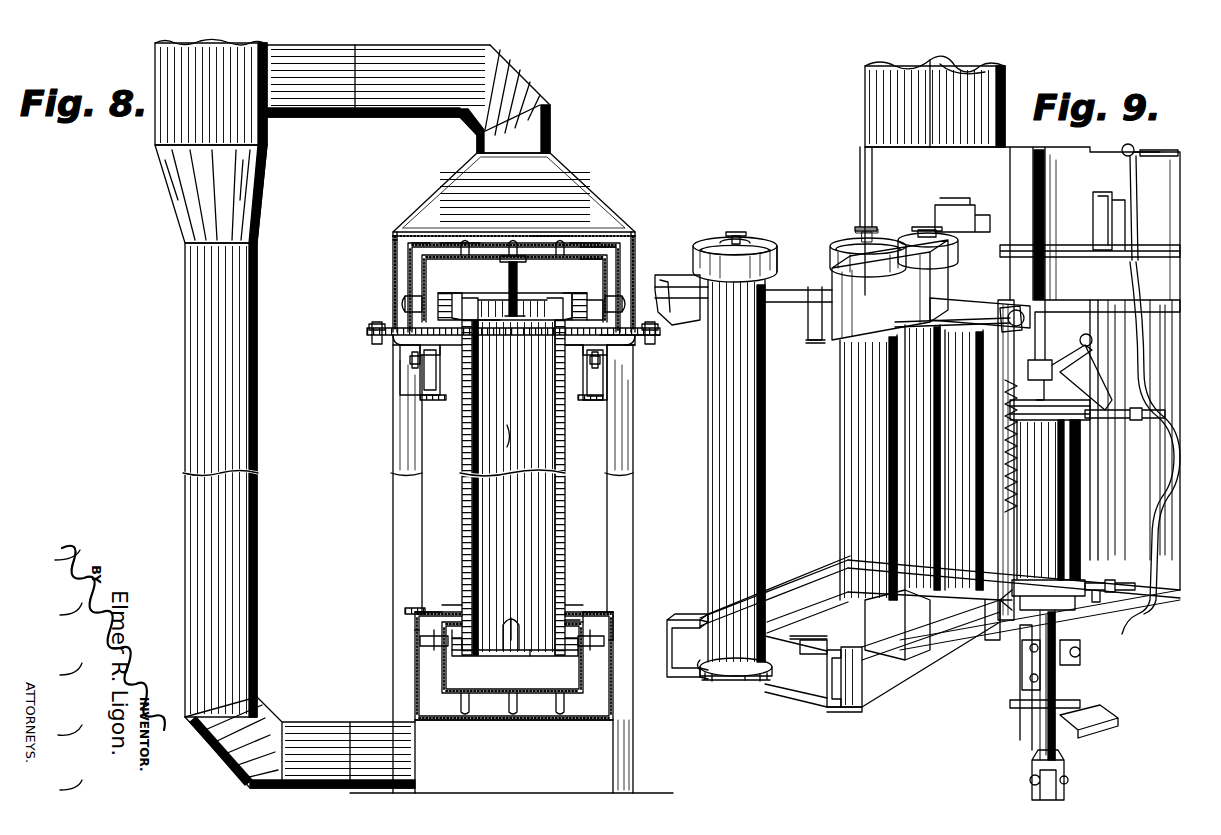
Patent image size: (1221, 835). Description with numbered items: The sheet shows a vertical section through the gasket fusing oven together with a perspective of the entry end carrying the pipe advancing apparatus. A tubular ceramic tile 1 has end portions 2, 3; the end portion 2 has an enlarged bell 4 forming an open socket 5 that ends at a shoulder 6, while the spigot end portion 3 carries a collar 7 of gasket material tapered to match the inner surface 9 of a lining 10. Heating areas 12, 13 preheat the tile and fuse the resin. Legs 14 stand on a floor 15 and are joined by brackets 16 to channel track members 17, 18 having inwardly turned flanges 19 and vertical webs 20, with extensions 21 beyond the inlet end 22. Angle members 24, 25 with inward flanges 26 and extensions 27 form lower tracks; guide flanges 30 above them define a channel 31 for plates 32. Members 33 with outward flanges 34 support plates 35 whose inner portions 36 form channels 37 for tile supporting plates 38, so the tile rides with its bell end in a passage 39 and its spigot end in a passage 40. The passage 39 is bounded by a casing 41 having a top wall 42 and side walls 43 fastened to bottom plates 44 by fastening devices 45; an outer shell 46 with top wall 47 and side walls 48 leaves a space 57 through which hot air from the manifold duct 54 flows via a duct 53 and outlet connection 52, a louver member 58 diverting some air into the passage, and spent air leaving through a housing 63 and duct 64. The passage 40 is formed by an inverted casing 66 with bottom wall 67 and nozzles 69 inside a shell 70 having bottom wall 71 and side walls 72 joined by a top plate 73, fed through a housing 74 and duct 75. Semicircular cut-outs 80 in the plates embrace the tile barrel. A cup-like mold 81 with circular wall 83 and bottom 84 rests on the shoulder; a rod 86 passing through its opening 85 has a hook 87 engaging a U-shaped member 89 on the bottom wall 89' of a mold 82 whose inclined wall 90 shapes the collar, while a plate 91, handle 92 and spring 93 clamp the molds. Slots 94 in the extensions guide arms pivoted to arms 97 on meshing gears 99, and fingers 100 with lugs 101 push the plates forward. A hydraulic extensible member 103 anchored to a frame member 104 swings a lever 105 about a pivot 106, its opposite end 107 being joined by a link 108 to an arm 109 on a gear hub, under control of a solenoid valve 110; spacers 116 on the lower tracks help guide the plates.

In FIG. 8, the tubular clay or ceramic tile 1 is at (465, 492).
In FIG. 9, the tubular clay or ceramic tile 1 is at (768, 385).
In FIG. 8, the end portion 2 is at (590, 315).
In FIG. 9, the end portion 2 is at (695, 262).
In FIG. 8, the end portion 3 is at (566, 621).
In FIG. 9, the end portion 3 is at (718, 676).
In FIG. 8, the enlarged bell 4 is at (580, 342).
In FIG. 9, the enlarged bell 4 is at (778, 260).
In FIG. 8, the open socket 5 is at (578, 300).
In FIG. 8, the shoulder or abutment 6 is at (552, 300).
In FIG. 8, the collar or band portion 7 is at (457, 652).
In FIG. 8, the tapered inner surface 9 is at (462, 293).
In FIG. 8, the lining 10 is at (448, 292).
In FIG. 9, the heating area 12 is at (1090, 150).
In FIG. 8, the heating area 13 is at (397, 235).
In FIG. 8, the legs 14 is at (396, 532).
In FIG. 9, the legs 14 is at (1024, 712).
In FIG. 8, the floor 15 is at (651, 793).
In FIG. 9, the floor 15 is at (1100, 732).
In FIG. 8, the brackets 16 is at (615, 399).
In FIG. 8, the track member 17 is at (430, 400).
In FIG. 9, the track member 17 is at (668, 292).
In FIG. 8, the track member 18 is at (586, 401).
In FIG. 9, the track member 18 is at (822, 342).
In FIG. 8, the flanges 19 is at (438, 376).
In FIG. 9, the flanges 19 is at (812, 298).
In FIG. 8, the web 20 is at (408, 348).
In FIG. 9, the web 20 is at (904, 325).
In FIG. 9, the extensions 21 is at (842, 372).
In FIG. 9, the inlet end 22 is at (953, 205).
In FIG. 8, the structural member 24 is at (416, 633).
In FIG. 9, the structural member 24 is at (680, 632).
In FIG. 8, the structural member 25 is at (611, 632).
In FIG. 9, the structural member 25 is at (830, 665).
In FIG. 8, the flanges 26 is at (440, 605).
In FIG. 9, the flanges 26 is at (812, 648).
In FIG. 9, the extensions 27 is at (838, 708).
In FIG. 8, the flanges 30 is at (606, 606).
In FIG. 9, the flanges 30 is at (862, 690).
In FIG. 8, the channel 31 is at (590, 606).
In FIG. 9, the channel 31 is at (820, 660).
In FIG. 8, the plates 32 is at (455, 598).
In FIG. 9, the plates 32 is at (700, 600).
In FIG. 8, the members 33 is at (622, 346).
In FIG. 8, the outwardly directed flanges 34 is at (640, 340).
In FIG. 8, the plates 35 is at (660, 333).
In FIG. 8, the inner portions 36 is at (592, 342).
In FIG. 8, the channels 37 is at (420, 300).
In FIG. 8, the tile supporting plates 38 is at (446, 370).
In FIG. 8, the passage 39 is at (600, 246).
In FIG. 8, the passage 40 is at (496, 720).
In FIG. 8, the casing 41 is at (410, 262).
In FIG. 8, the top wall 42 is at (590, 243).
In FIG. 8, the side walls 43 is at (422, 280).
In FIG. 8, the bottom plates 44 is at (381, 331).
In FIG. 9, the bottom plates 44 is at (1160, 242).
In FIG. 8, the fastening devices 45 is at (378, 342).
In FIG. 8, the outer shell 46 is at (600, 258).
In FIG. 9, the outer shell 46 is at (1165, 168).
In FIG. 8, the top wall 47 is at (420, 244).
In FIG. 8, the side walls 48 is at (395, 252).
In FIG. 9, the side walls 48 is at (1143, 168).
In FIG. 8, the outlet connection 52 is at (588, 190).
In FIG. 8, the duct 53 is at (552, 112).
In FIG. 8, the manifold duct 54 is at (157, 47).
In FIG. 8, the space 57 is at (548, 238).
In FIG. 8, the louver member 58 is at (470, 243).
In FIG. 9, the housing 63 is at (880, 162).
In FIG. 9, the duct 64 is at (1000, 131).
In FIG. 8, the casing 66 is at (440, 677).
In FIG. 8, the bottom wall 67 is at (559, 712).
In FIG. 8, the nozzles 69 is at (465, 712).
In FIG. 8, the shell 70 is at (416, 711).
In FIG. 8, the bottom wall 71 is at (528, 720).
In FIG. 8, the side walls 72 is at (614, 686).
In FIG. 8, the top plate 73 is at (416, 622).
In FIG. 8, the housing 74 is at (606, 740).
In FIG. 8, the duct 75 is at (332, 724).
In FIG. 9, the cut-out portions 80 is at (800, 615).
In FIG. 8, the mold 81 is at (588, 305).
In FIG. 9, the mold 81 is at (750, 240).
In FIG. 8, the mold 82 is at (481, 656).
In FIG. 9, the mold 82 is at (730, 680).
In FIG. 8, the circular wall 83 is at (478, 300).
In FIG. 8, the bottom 84 is at (487, 321).
In FIG. 8, the opening 85 is at (518, 316).
In FIG. 8, the rod 86 is at (512, 440).
In FIG. 8, the hook 87 is at (545, 606).
In FIG. 8, the U-shaped member 89 is at (513, 649).
In FIG. 8, the bottom wall 89' is at (545, 665).
In FIG. 9, the bottom wall 89' is at (758, 692).
In FIG. 8, the circular wall 90 is at (432, 648).
In FIG. 9, the circular wall 90 is at (706, 674).
In FIG. 8, the plate 91 is at (530, 300).
In FIG. 8, the handle 92 is at (506, 257).
In FIG. 9, the handle 92 is at (742, 232).
In FIG. 8, the spring 93 is at (521, 268).
In FIG. 9, the spring 93 is at (730, 238).
In FIG. 9, the elongated slots 94 is at (970, 290).
In FIG. 9, the arms 97 is at (1040, 318).
In FIG. 9, the meshing gears 99 is at (1008, 500).
In FIG. 9, the fingers 100 is at (880, 290).
In FIG. 9, the lugs 101 is at (840, 248).
In FIG. 9, the hydraulic extensible member 103 is at (1025, 437).
In FIG. 9, the frame member 104 is at (1020, 352).
In FIG. 9, the lever 105 is at (1072, 740).
In FIG. 9, the pivot 106 is at (1085, 658).
In FIG. 9, the opposite end 107 is at (1105, 592).
In FIG. 9, the link 108 is at (1118, 540).
In FIG. 9, the arm 109 is at (1085, 305).
In FIG. 9, the valve 110 is at (1092, 210).
In FIG. 8, the spacers 116 is at (420, 606).